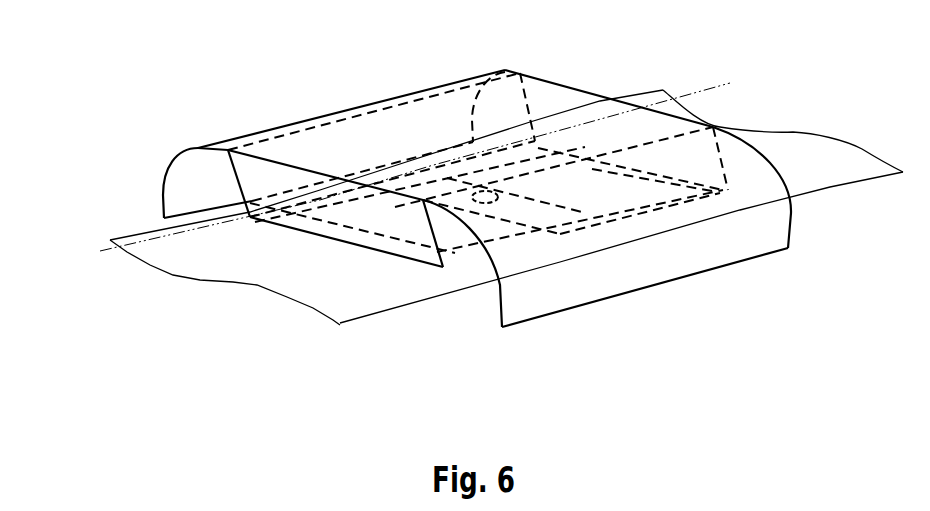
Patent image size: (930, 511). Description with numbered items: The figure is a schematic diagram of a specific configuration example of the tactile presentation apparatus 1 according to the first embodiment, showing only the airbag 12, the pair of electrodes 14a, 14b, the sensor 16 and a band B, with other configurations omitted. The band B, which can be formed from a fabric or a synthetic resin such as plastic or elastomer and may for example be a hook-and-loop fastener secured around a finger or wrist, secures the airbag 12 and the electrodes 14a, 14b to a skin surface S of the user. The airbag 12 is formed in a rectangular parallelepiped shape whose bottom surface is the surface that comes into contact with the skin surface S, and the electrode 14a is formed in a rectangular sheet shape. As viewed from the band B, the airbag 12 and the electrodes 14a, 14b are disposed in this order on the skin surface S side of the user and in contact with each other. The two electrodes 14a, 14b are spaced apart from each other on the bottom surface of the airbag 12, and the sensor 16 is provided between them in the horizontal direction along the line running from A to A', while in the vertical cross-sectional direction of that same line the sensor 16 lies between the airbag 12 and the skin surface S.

The tactile presentation apparatus 1 is at (558, 66).
The airbag 12 is at (186, 171).
The electrode 14a is at (411, 228).
The electrode 14b is at (630, 200).
The sensor 16 is at (489, 205).
The band B is at (780, 227).
The skin surface S is at (811, 150).
The line A-A' A is at (386, 177).
The line A- A' is at (714, 75).